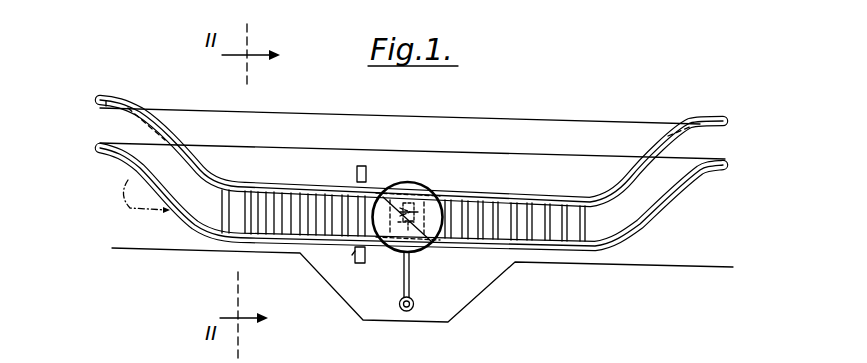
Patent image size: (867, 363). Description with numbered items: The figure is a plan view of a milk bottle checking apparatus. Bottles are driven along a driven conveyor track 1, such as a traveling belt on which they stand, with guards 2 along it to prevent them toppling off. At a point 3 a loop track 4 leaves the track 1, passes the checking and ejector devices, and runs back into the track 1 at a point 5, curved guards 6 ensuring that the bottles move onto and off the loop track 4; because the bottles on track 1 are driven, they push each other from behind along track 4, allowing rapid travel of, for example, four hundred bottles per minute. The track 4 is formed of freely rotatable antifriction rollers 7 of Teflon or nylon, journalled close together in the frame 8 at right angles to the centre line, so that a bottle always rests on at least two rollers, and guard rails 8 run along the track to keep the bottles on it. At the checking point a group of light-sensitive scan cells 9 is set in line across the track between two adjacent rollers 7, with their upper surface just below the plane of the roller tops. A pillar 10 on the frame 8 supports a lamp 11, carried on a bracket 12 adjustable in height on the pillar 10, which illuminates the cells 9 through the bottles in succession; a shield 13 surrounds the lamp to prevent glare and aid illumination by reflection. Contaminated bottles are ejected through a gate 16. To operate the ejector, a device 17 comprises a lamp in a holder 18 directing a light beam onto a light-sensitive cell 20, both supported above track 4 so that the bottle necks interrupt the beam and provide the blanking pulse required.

The driven conveyor track 1 is at (708, 138).
The guards 2 is at (689, 200).
The loop track departure point 3 is at (653, 230).
The loop track 4 is at (507, 199).
The loop track return point 5 is at (157, 228).
The curved guards 6 is at (130, 165).
The antifriction rollers 7 is at (282, 222).
The frame 8 is at (475, 280).
The light-sensitive scan cells 9 is at (395, 252).
The pillar 10 is at (405, 312).
The lamp 11 is at (445, 193).
The bracket 12 is at (410, 278).
The shield 13 is at (428, 189).
The gate 16 is at (150, 213).
The ejector operating device 17 is at (360, 265).
The holder 18 is at (352, 255).
The light-sensitive cell 20 is at (357, 173).